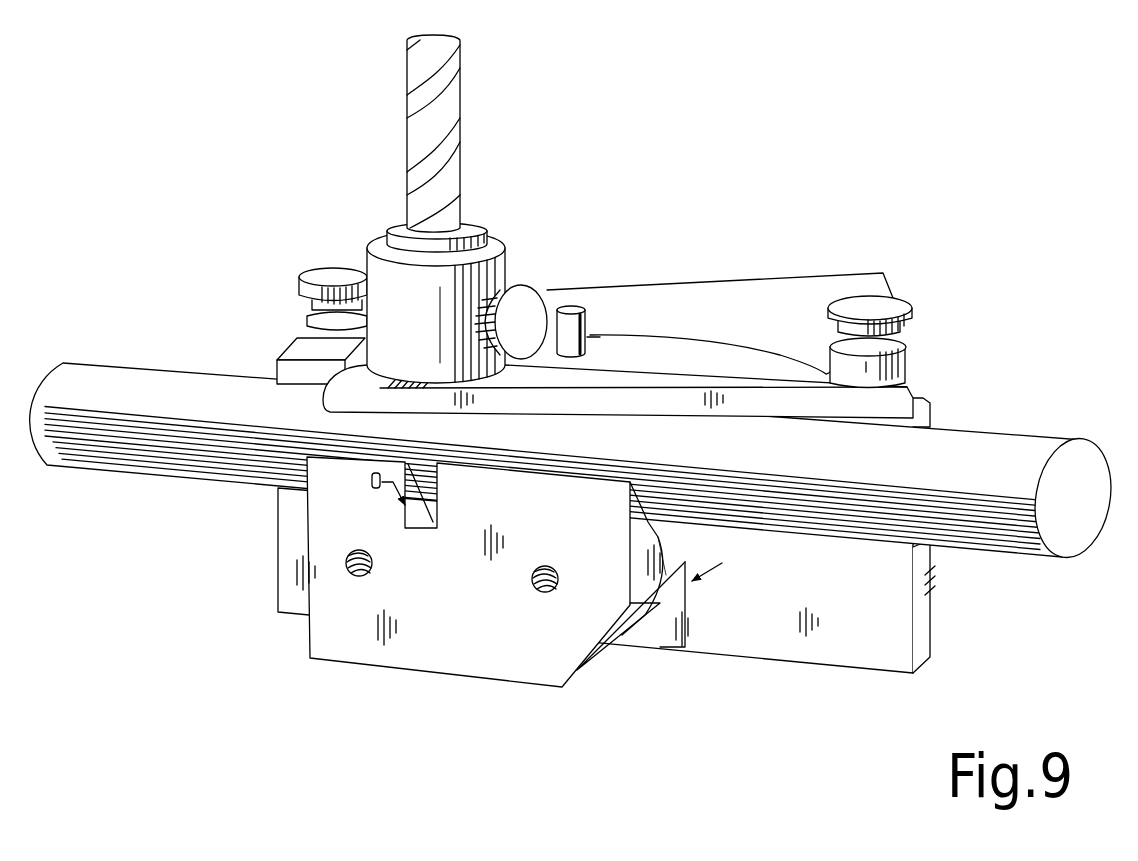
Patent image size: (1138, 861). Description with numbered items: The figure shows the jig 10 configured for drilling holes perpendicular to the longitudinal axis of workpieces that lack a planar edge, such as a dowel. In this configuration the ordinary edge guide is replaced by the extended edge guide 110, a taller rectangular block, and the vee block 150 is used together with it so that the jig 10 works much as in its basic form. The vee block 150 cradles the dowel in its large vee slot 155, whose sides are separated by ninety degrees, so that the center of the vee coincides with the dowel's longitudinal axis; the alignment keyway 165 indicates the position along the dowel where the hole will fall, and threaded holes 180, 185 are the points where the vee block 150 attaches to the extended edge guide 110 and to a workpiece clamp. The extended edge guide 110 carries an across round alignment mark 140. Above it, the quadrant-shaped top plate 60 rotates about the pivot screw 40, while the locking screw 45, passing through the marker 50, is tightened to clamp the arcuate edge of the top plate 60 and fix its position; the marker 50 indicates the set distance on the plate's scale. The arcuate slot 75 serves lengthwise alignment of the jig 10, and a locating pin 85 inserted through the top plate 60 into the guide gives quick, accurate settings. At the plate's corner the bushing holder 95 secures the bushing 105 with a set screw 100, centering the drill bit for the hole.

The jig 10 is at (797, 191).
The pivot screw 40 is at (902, 297).
The locking screw 45 is at (316, 270).
The marker 50 is at (297, 338).
The top plate 60 is at (808, 272).
The arcuate slot 75 is at (690, 332).
The locating pin 85 is at (587, 327).
The bushing holder 95 is at (507, 247).
The set screw 100 is at (537, 292).
The bushing 105 is at (467, 224).
The extended edge guide 110 is at (847, 667).
The across round alignment mark 140 is at (688, 625).
The vee block 150 is at (388, 667).
The large vee slot 155 is at (660, 605).
The alignment keyway 165 is at (405, 512).
The threaded hole 180 is at (538, 592).
The threaded hole 185 is at (347, 572).